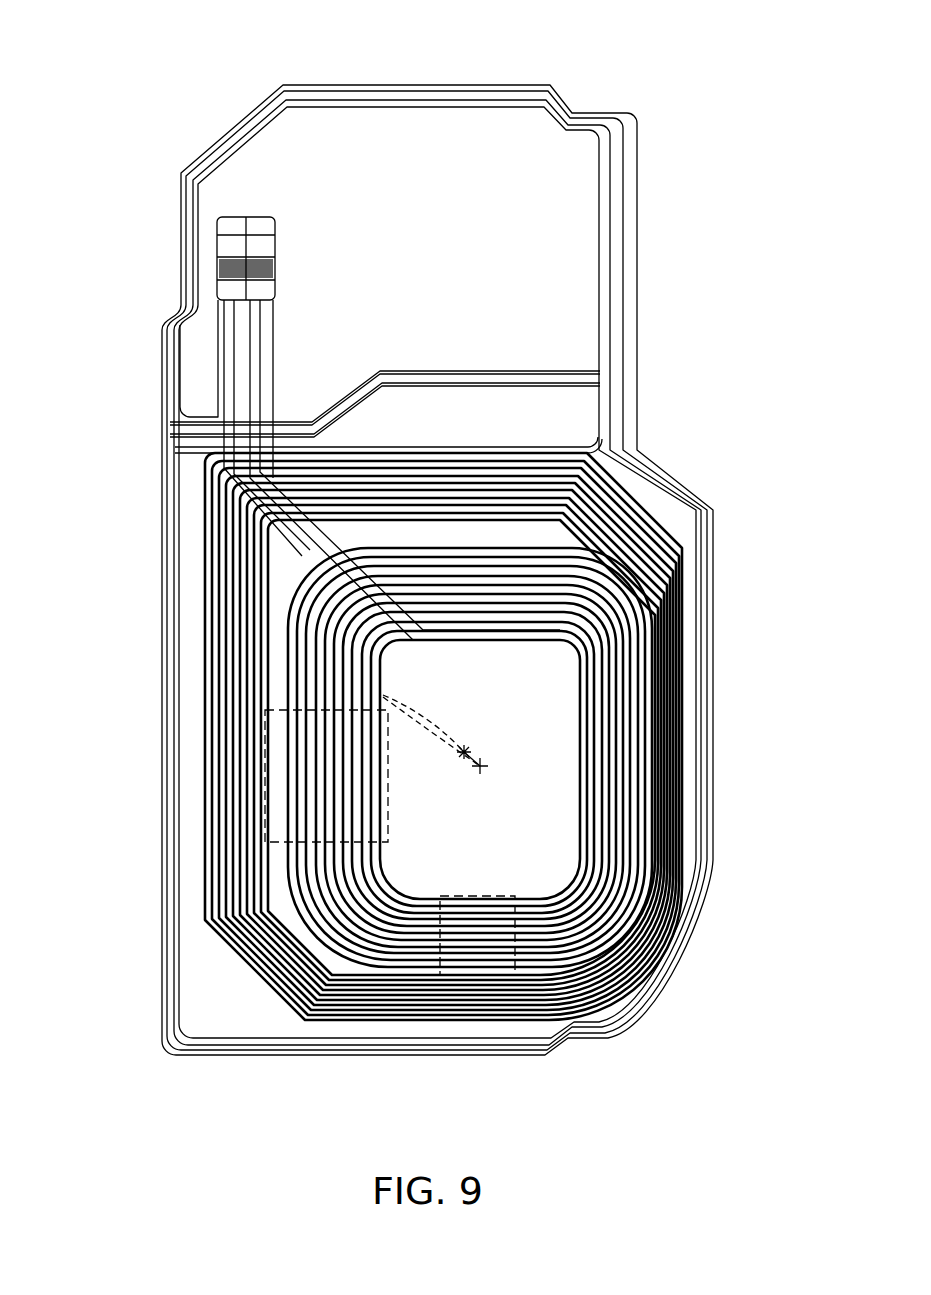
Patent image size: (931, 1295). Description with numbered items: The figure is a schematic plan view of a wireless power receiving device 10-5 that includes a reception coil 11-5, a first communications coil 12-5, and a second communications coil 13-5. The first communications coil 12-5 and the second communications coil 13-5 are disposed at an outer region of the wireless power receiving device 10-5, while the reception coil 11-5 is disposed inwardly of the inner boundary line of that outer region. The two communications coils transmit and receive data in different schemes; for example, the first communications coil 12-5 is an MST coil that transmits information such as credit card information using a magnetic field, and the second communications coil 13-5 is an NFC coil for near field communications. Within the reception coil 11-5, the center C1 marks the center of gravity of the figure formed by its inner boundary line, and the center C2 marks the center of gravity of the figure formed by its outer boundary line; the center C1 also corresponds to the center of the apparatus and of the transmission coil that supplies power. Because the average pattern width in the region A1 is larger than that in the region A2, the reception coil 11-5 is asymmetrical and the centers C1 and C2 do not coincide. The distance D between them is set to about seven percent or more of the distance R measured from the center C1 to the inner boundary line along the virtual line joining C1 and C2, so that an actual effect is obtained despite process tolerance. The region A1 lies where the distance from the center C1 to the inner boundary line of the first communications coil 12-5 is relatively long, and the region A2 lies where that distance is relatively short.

The wireless power receiving device 10-5 is at (448, 34).
The reception coil 11-5 is at (320, 673).
The first communications coil 12-5 is at (683, 665).
The second communications coil 13-5 is at (677, 483).
The region A1 is at (268, 789).
The region A2 is at (472, 1022).
The distance R is at (466, 748).
The center of the inner boundary line C1 is at (451, 743).
The center of the outer boundary line C2 is at (447, 759).
The distance D is at (476, 768).